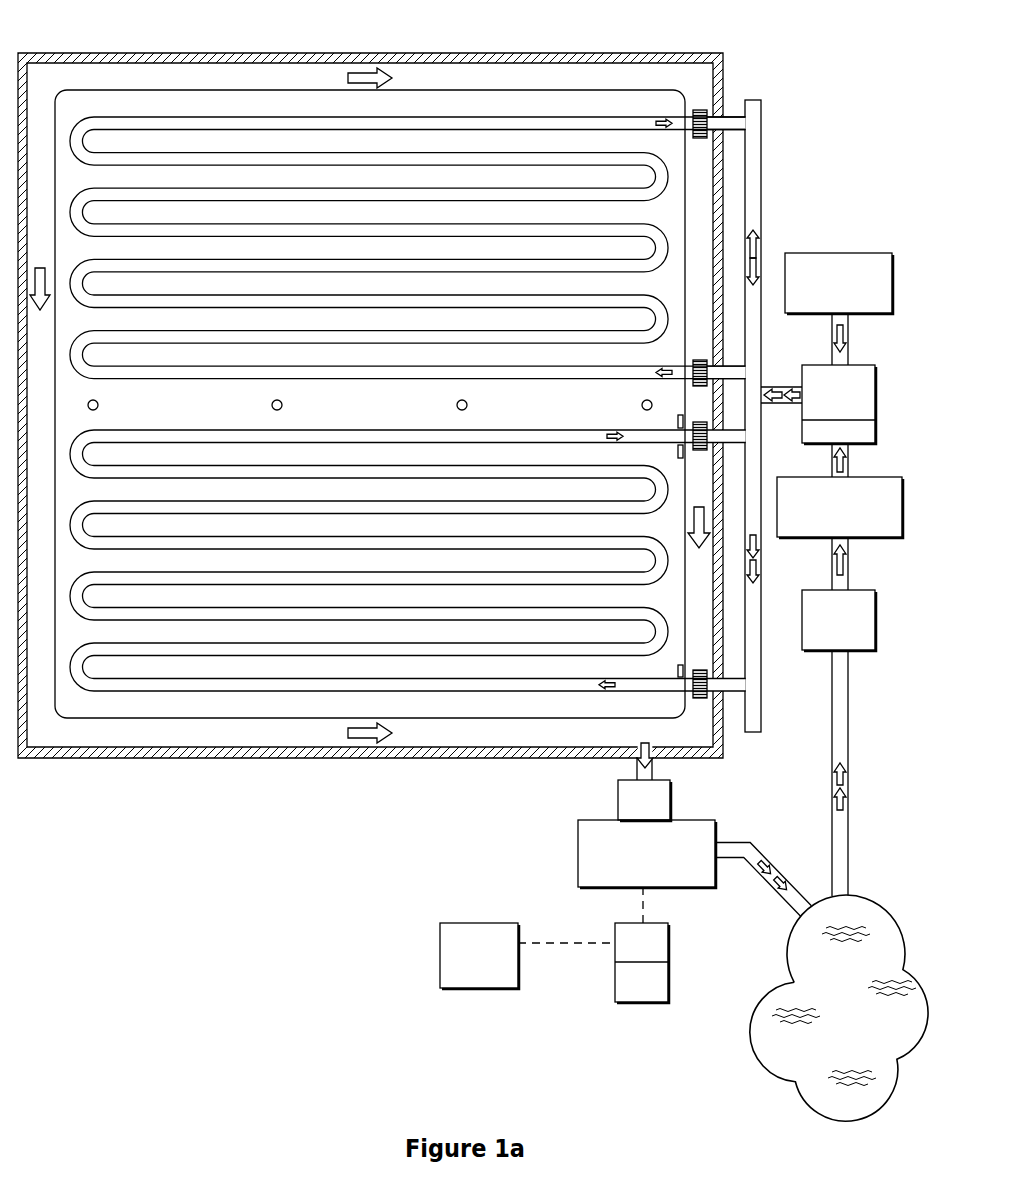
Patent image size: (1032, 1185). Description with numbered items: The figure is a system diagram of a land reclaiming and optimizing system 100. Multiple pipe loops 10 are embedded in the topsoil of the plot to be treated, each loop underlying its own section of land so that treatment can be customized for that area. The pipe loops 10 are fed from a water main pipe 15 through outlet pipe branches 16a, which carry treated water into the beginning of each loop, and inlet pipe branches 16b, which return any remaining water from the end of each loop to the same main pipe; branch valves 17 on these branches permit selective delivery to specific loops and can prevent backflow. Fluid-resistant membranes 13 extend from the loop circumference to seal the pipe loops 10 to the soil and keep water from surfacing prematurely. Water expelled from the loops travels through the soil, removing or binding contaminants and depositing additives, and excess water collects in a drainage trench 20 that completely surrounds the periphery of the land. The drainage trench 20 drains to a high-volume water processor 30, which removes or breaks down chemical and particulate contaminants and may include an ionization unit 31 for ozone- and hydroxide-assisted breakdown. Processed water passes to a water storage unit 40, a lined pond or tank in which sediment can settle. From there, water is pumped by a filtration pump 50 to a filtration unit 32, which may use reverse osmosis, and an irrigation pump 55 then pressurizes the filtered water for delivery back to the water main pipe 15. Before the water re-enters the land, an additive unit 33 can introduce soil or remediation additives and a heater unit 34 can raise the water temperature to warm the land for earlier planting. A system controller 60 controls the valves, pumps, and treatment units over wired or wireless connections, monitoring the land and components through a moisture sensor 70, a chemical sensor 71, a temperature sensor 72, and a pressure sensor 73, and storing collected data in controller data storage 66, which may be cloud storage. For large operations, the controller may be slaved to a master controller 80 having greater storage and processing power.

The land reclaiming and optimizing system 100 is at (123, 827).
The pipe loop 10 is at (200, 372).
The fluid-resistant membrane 13 is at (678, 451).
The water main pipe 15 is at (762, 100).
The outlet pipe branch 16a is at (728, 117).
The inlet pipe branch 16b is at (727, 372).
The branch valve 17 is at (697, 110).
The drainage trench 20 is at (58, 732).
The water processor 30 is at (615, 852).
The ionization unit 31 is at (655, 807).
The filtration unit 32 is at (814, 509).
The additive unit 33 is at (822, 285).
The heater unit 34 is at (802, 430).
The water storage unit 40 is at (872, 898).
The filtration pump 50 is at (837, 622).
The irrigation pump 55 is at (837, 397).
The system controller 60 is at (654, 954).
The controller data storage 66 is at (654, 995).
The moisture sensor 70 is at (100, 402).
The chemical sensor 71 is at (284, 402).
The temperature sensor 72 is at (469, 402).
The pressure sensor 73 is at (640, 407).
The master controller 80 is at (473, 952).